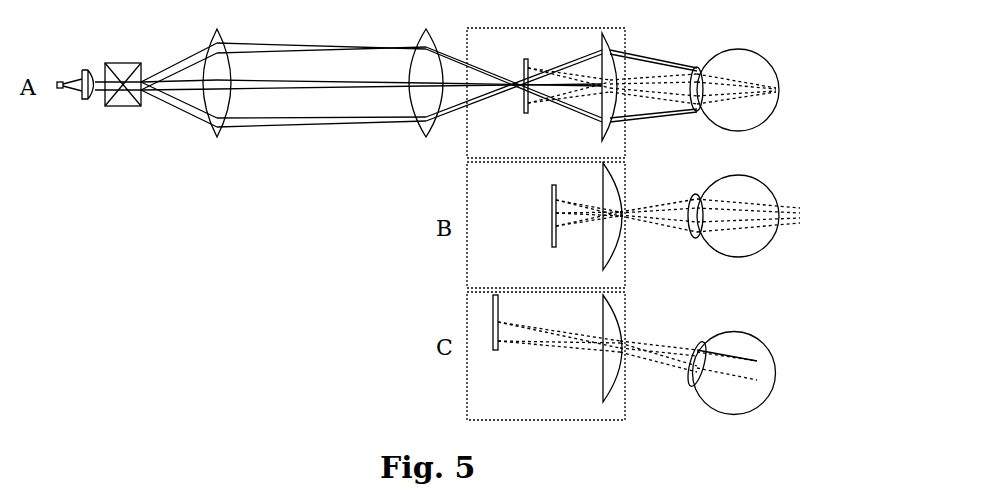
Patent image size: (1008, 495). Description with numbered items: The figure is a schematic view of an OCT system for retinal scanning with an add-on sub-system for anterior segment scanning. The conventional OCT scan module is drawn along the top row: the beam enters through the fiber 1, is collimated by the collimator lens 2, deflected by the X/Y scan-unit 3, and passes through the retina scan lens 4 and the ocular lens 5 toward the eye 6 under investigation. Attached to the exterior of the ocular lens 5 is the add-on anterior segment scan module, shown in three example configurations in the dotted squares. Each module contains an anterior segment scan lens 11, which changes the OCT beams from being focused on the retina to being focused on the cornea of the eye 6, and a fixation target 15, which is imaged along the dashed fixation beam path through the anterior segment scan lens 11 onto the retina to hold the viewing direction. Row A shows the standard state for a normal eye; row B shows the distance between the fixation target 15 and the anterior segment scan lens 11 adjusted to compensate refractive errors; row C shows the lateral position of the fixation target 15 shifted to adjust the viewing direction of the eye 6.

The fiber 1 is at (69, 91).
The collimator lens 2 is at (88, 97).
The X/Y scan-unit 3 is at (123, 94).
The retina scan lens 4 is at (217, 94).
The ocular lens 5 is at (426, 94).
The fixation target 15 is at (524, 214).
The anterior segment scan lens 11 is at (611, 229).
The eye 6 is at (731, 238).